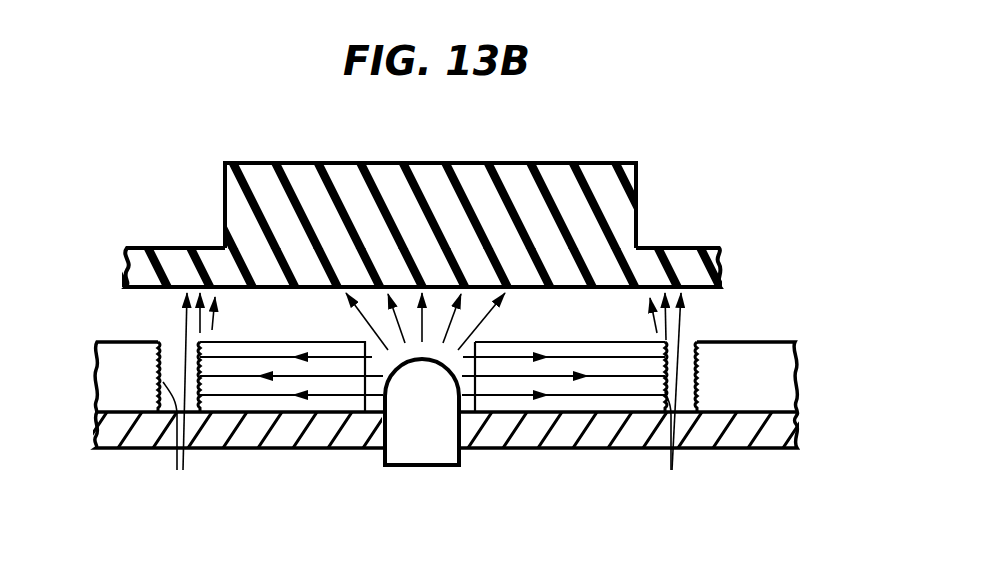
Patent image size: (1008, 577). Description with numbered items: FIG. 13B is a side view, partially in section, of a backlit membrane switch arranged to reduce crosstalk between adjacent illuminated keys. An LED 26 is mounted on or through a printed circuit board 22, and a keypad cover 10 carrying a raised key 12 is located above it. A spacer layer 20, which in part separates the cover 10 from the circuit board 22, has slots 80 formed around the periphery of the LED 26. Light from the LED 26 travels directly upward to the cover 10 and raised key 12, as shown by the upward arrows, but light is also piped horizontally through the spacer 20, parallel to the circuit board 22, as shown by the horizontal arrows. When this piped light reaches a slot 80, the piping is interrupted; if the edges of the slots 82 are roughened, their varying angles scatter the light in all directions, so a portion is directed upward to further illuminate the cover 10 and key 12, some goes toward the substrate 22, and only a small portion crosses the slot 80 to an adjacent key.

The keypad cover 10 is at (146, 247).
The raised key 12 is at (636, 176).
The spacer layer 20 is at (778, 360).
The printed circuit board 22 is at (572, 449).
The LED 26 is at (396, 452).
The slots 80 is at (176, 350).
The edges of the slots 82 is at (690, 487).